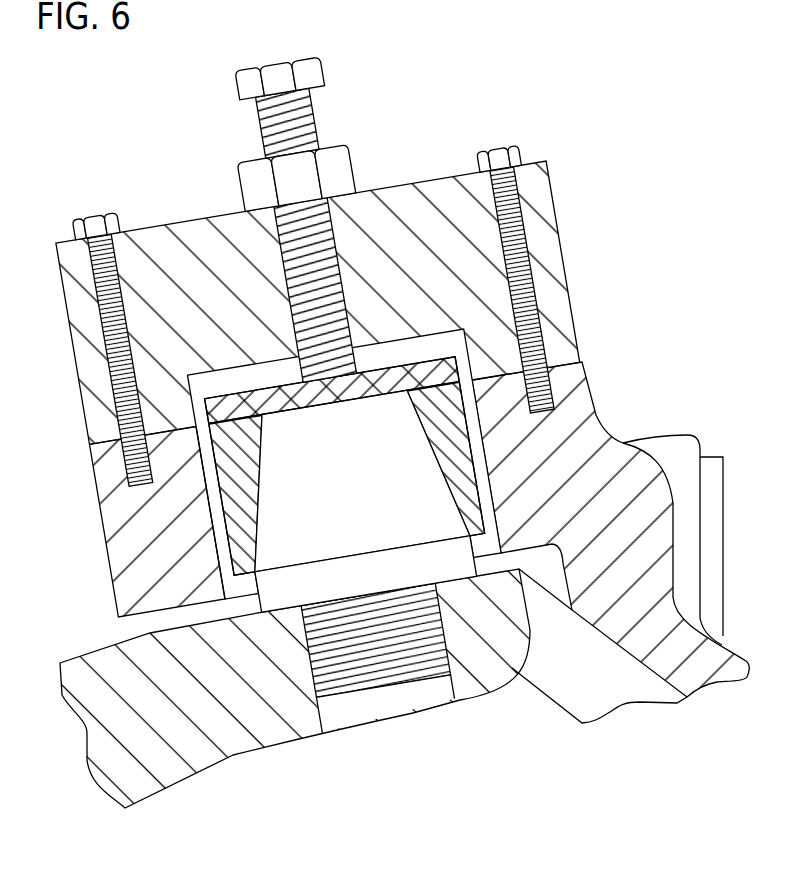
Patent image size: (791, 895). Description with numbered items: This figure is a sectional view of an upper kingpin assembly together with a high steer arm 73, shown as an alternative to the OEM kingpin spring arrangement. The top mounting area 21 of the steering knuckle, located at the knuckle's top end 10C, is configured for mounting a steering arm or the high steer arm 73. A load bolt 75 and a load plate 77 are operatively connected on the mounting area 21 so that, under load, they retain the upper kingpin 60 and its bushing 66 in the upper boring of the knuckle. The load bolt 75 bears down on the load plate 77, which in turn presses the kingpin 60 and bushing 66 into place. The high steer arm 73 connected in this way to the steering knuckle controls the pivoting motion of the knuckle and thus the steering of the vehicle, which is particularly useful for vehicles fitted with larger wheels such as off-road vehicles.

The high steer arm 73 is at (174, 250).
The load bolt 75 is at (320, 70).
The load plate 77 is at (247, 400).
The mounting area 21 is at (560, 358).
The top end 10C is at (580, 413).
The upper kingpin 60 is at (363, 497).
The bushing 66 is at (237, 500).